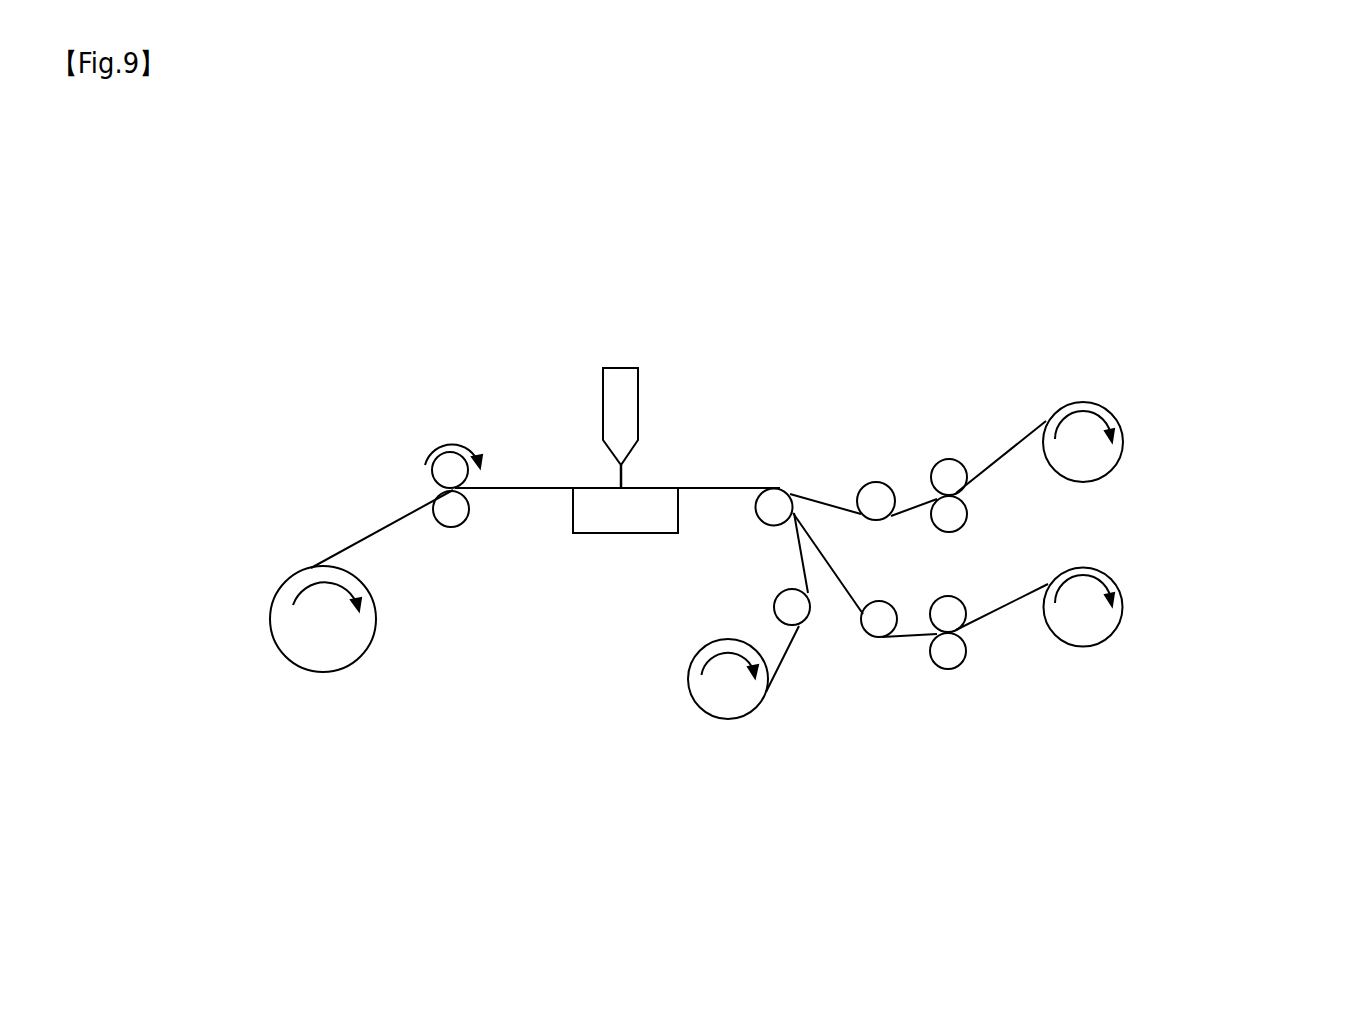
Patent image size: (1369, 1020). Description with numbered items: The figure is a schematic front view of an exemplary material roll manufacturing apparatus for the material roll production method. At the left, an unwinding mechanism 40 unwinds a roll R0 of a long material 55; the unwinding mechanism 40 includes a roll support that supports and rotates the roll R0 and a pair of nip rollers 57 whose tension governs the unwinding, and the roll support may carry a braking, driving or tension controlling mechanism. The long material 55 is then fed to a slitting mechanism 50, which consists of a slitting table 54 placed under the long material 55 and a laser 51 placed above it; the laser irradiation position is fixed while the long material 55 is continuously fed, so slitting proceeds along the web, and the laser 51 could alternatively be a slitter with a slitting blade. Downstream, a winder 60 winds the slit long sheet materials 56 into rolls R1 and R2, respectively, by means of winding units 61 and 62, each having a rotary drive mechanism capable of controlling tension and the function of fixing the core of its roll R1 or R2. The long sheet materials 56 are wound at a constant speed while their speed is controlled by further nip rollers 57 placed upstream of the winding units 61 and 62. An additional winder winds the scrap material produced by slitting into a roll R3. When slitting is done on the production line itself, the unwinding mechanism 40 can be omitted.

The unwinding mechanism 40 is at (352, 660).
The slitting mechanism 50 is at (696, 452).
The laser 51 is at (639, 423).
The slitting table 54 is at (653, 534).
The long material 55 is at (352, 539).
The long sheet materials 56 is at (1002, 476).
The nip rollers 57 is at (456, 530).
The winder 60 is at (1204, 519).
The winding unit 61 is at (1157, 430).
The winding unit 62 is at (1158, 602).
The roll R0 is at (275, 592).
The roll R1 is at (1097, 403).
The roll R2 is at (1076, 646).
The roll R3 is at (728, 732).